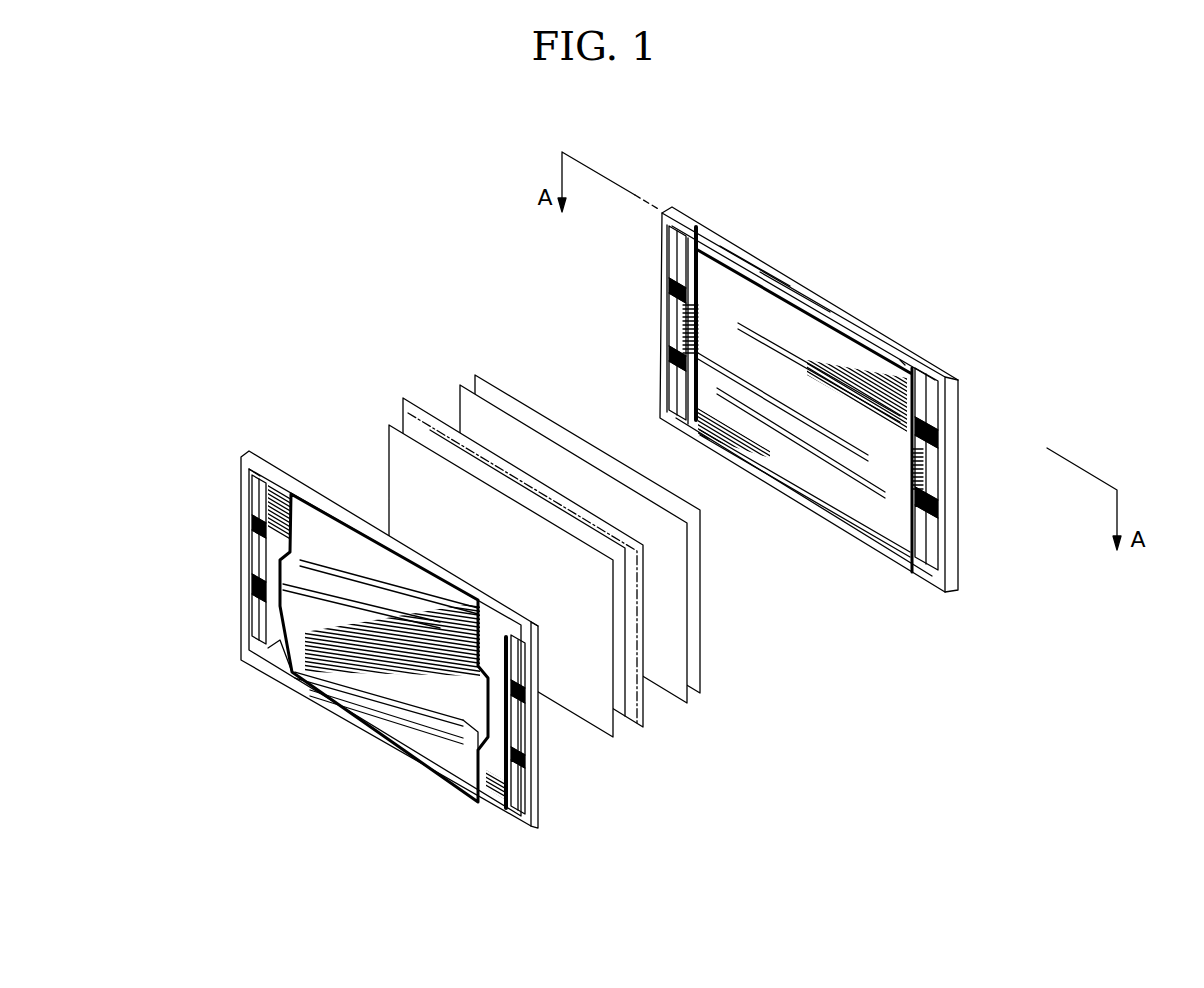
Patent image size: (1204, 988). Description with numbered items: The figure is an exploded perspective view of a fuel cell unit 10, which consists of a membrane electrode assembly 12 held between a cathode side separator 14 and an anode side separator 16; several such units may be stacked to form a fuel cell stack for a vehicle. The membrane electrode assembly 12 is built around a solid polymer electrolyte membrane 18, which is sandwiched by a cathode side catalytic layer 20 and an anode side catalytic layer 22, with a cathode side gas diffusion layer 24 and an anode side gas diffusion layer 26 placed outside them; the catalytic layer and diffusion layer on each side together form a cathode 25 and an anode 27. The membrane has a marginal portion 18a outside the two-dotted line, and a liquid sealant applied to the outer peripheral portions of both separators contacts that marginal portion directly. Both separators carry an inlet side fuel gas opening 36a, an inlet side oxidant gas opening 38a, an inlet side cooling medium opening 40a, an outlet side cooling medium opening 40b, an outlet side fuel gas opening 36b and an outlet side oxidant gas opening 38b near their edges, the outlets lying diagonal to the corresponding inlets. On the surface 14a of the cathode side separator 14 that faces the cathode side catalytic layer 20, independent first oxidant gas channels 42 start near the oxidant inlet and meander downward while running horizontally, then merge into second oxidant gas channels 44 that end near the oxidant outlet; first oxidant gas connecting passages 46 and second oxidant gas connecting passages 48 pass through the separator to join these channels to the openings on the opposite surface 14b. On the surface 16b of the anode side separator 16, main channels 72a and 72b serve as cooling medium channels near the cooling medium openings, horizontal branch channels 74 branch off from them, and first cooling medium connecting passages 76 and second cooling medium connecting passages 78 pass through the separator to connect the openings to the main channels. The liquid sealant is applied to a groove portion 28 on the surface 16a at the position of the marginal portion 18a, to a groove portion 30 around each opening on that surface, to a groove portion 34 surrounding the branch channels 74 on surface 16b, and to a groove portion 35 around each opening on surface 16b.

The fuel cell unit 10 is at (440, 265).
The membrane electrode assembly 12 is at (323, 410).
The cathode side separator 14 is at (696, 212).
The surface of cathode side separator 14a is at (747, 258).
The surface of cathode side separator 14b is at (788, 293).
The anode side separator 16 is at (238, 453).
The surface of anode side separator 16a is at (430, 571).
The surface of anode side separator 16b is at (273, 478).
The solid polymer electrolyte membrane 18 is at (650, 740).
The marginal portion 18a is at (645, 609).
The cathode side catalytic layer 20 is at (515, 433).
The anode side catalytic layer 22 is at (627, 733).
The cathode side gas diffusion layer 24 is at (550, 430).
The cathode 25 is at (482, 320).
The anode side gas diffusion layer 26 is at (604, 737).
The anode 27 is at (717, 832).
The groove portion 28 is at (904, 357).
The groove portion 30 is at (667, 210).
The groove portion 34 is at (347, 727).
The groove portion 35 is at (243, 470).
The inlet side fuel gas opening 36a is at (253, 500).
The outlet side fuel gas opening 36b is at (507, 818).
The inlet side oxidant gas opening 38a is at (514, 640).
The outlet side oxidant gas opening 38b is at (252, 630).
The inlet side cooling medium opening 40a is at (252, 563).
The outlet side cooling medium opening 40b is at (527, 750).
The first oxidant gas channels 42 is at (849, 345).
The second oxidant gas channels 44 is at (740, 458).
The first oxidant gas connecting passages 46 is at (916, 350).
The second oxidant gas connecting passages 48 is at (698, 436).
The main channels 72a is at (253, 663).
The main channels 72b is at (473, 735).
The branch channels 74 is at (403, 698).
The first cooling medium connecting passages 76 is at (315, 568).
The second cooling medium connecting passages 78 is at (523, 700).